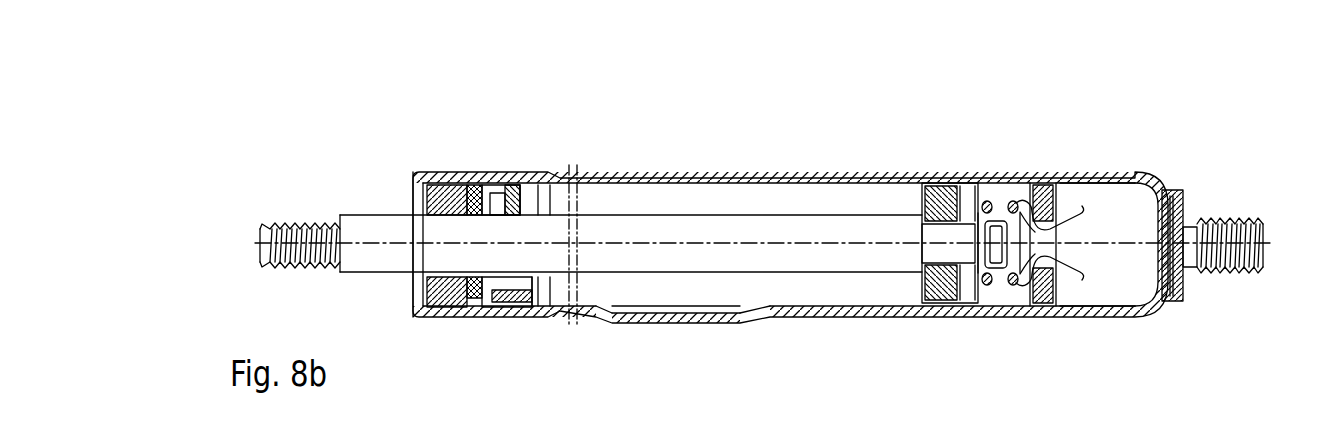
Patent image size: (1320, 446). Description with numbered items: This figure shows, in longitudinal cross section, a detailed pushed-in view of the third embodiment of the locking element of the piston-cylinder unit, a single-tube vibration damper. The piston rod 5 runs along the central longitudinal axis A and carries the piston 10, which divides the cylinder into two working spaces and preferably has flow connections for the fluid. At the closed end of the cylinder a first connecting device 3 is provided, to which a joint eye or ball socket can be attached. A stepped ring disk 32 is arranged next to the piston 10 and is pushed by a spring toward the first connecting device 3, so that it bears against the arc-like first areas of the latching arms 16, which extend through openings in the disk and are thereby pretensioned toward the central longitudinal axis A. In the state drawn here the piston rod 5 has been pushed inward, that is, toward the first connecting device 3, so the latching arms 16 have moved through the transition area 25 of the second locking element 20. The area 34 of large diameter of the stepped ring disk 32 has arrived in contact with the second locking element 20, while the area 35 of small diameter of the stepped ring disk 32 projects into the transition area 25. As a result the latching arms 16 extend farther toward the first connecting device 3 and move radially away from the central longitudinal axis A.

The piston 10 is at (940, 321).
The piston rod 5 is at (372, 232).
The central longitudinal axis A is at (256, 243).
The first connecting device 3 is at (1243, 218).
The second locking element 20 is at (1025, 262).
The stepped ring disk 32 is at (1020, 275).
The latching arm 16 is at (1068, 212).
The area of large diameter 34 is at (1020, 212).
The area of small diameter 35 is at (1037, 212).
The transition area 25 is at (1097, 257).